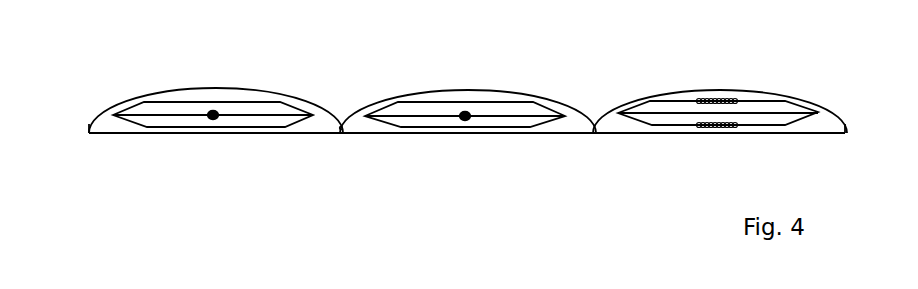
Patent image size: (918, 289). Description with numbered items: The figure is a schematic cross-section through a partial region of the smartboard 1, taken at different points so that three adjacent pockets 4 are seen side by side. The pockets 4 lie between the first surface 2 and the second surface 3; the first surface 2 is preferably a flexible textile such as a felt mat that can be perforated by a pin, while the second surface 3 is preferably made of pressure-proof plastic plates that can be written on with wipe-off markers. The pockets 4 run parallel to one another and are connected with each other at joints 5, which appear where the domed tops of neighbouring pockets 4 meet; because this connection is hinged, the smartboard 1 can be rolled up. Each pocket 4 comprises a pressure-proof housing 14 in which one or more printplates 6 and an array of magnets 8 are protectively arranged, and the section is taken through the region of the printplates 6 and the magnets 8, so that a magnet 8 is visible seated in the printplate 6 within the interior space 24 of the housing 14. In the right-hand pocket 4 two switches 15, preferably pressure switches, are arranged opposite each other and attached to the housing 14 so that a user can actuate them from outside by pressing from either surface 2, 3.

The smartboard 1 is at (89, 66).
The first surface 2 is at (532, 92).
The second surface 3 is at (488, 133).
The pocket 4 is at (112, 125).
The joint 5 is at (341, 128).
The printplate 6 is at (165, 112).
The magnet 8 is at (467, 110).
The housing 14 is at (243, 102).
The switch 15 is at (718, 98).
The interior space 24 is at (235, 122).